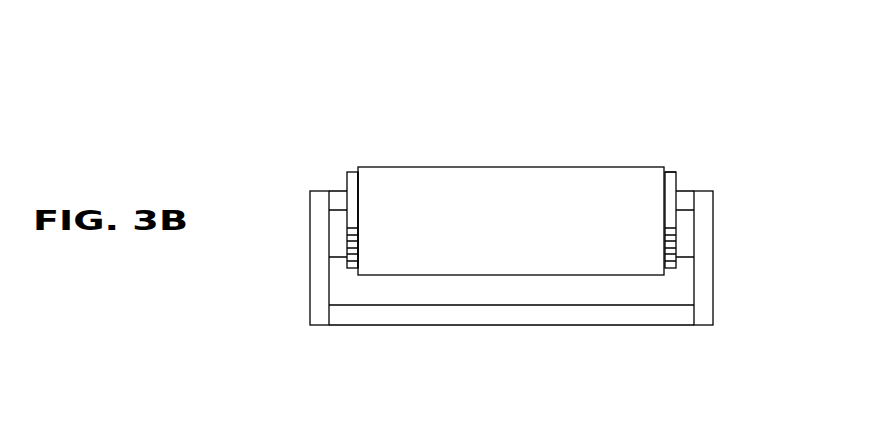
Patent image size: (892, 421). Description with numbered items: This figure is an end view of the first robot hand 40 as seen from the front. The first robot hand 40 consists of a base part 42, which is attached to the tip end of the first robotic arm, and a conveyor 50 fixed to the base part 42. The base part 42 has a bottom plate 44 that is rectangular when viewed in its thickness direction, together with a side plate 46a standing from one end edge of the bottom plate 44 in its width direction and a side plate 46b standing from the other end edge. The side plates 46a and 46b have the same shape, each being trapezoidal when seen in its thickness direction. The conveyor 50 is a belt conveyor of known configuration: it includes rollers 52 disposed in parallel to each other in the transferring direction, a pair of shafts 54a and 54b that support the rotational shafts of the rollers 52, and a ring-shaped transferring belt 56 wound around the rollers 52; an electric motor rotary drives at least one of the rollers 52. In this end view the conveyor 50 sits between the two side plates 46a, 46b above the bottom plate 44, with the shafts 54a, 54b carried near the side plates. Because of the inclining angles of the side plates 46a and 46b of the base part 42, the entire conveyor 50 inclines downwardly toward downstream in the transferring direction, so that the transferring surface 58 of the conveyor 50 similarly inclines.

The first robot hand 40 is at (277, 152).
The base part 42 is at (713, 325).
The bottom plate 44 is at (442, 315).
The side plate 46a is at (318, 285).
The side plate 46b is at (703, 285).
The conveyor 50 is at (433, 133).
The rollers 52 is at (670, 170).
The shaft 54a is at (335, 188).
The shaft 54b is at (685, 187).
The transferring belt 56 is at (382, 188).
The transferring surface 58 is at (547, 167).